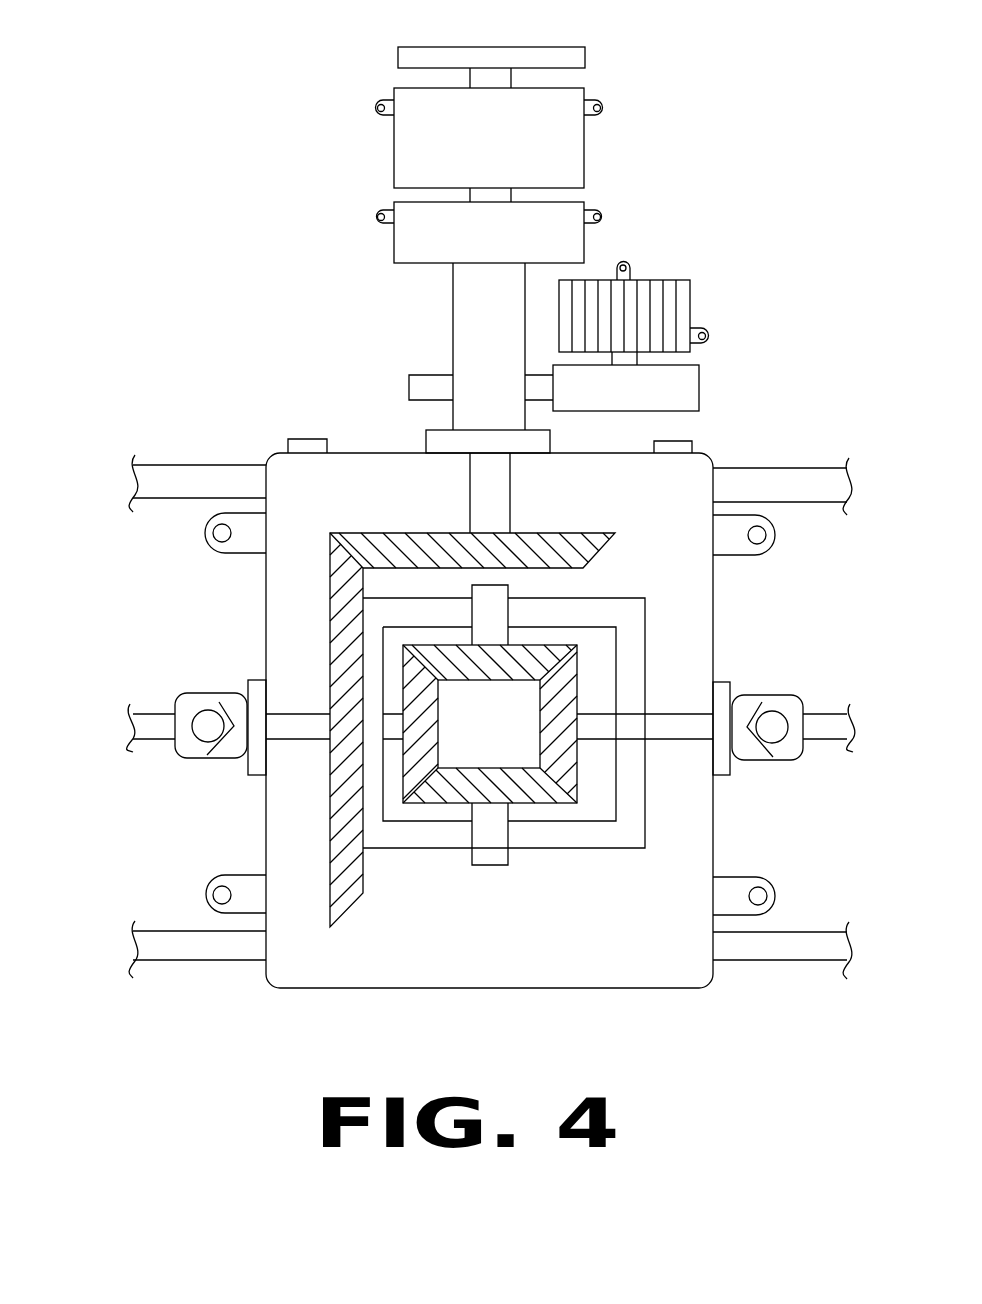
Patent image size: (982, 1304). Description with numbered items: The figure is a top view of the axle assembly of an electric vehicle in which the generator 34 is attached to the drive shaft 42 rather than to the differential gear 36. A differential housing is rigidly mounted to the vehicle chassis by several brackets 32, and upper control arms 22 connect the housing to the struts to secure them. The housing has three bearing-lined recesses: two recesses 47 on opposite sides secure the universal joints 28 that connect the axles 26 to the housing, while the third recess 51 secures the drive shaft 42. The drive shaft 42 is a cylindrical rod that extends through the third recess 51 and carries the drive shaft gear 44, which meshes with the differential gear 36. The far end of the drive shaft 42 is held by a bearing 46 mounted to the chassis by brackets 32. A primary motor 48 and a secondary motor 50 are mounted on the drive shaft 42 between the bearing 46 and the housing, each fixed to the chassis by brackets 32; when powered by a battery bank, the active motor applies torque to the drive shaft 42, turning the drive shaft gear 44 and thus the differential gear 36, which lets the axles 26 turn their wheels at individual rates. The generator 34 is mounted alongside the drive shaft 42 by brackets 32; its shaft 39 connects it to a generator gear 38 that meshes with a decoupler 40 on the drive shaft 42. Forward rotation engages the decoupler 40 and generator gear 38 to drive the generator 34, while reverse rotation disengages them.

The upper control arm 22 is at (162, 477).
The axle 26 is at (127, 723).
The universal joint 28 is at (208, 720).
The bracket 32 is at (580, 55).
The generator 34 is at (670, 307).
The differential gear 36 is at (350, 862).
The generator gear 38 is at (693, 387).
The shaft 39 is at (630, 358).
The decoupler 40 is at (432, 382).
The drive shaft 42 is at (477, 418).
The drive shaft gear 44 is at (410, 547).
The bearing 46 is at (487, 47).
The recess 47 is at (237, 765).
The primary motor 48 is at (427, 243).
The secondary motor 50 is at (410, 135).
The third recess 51 is at (540, 442).